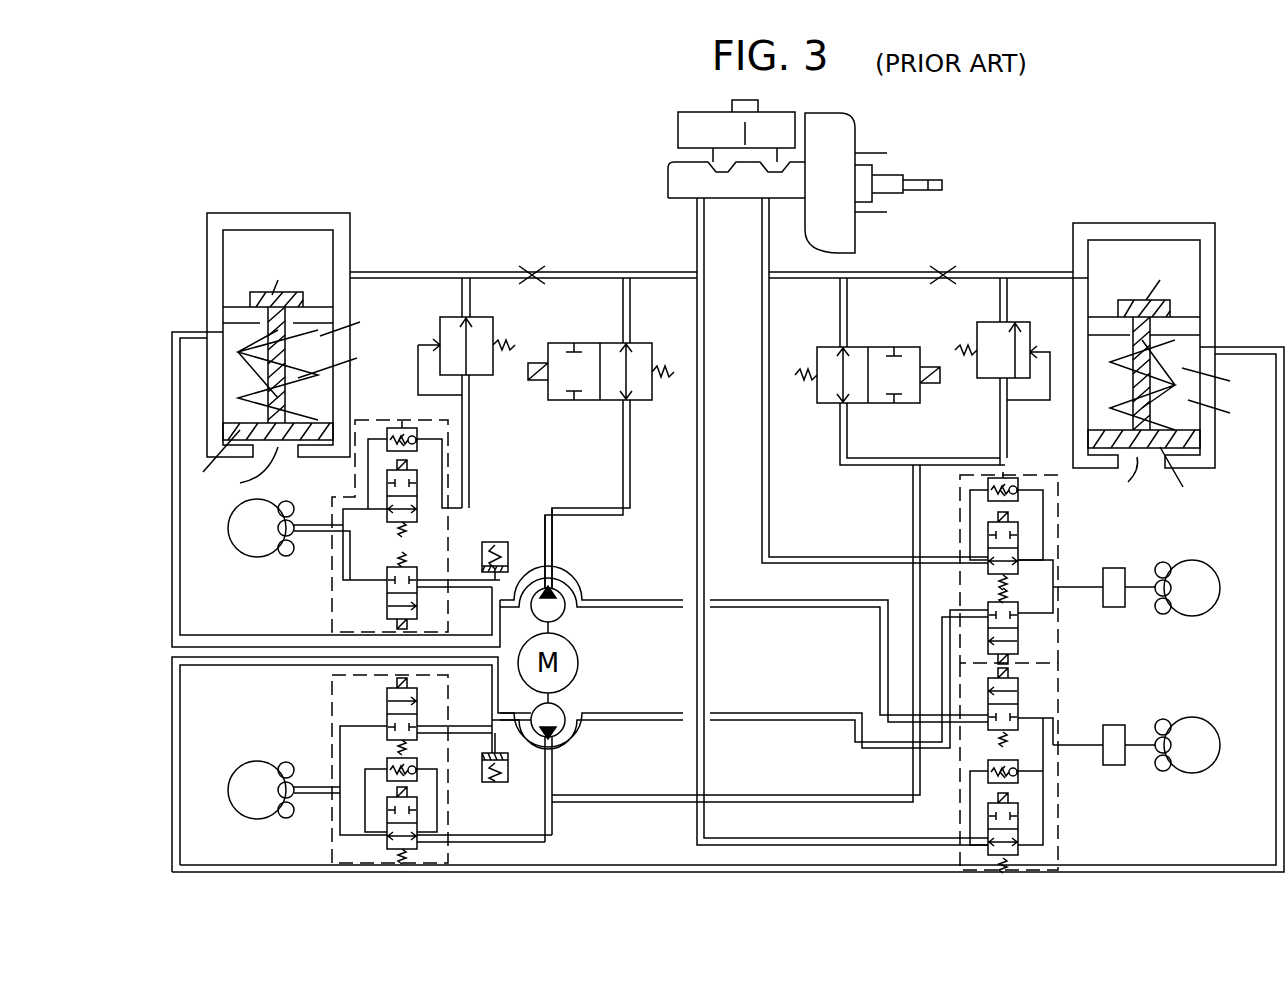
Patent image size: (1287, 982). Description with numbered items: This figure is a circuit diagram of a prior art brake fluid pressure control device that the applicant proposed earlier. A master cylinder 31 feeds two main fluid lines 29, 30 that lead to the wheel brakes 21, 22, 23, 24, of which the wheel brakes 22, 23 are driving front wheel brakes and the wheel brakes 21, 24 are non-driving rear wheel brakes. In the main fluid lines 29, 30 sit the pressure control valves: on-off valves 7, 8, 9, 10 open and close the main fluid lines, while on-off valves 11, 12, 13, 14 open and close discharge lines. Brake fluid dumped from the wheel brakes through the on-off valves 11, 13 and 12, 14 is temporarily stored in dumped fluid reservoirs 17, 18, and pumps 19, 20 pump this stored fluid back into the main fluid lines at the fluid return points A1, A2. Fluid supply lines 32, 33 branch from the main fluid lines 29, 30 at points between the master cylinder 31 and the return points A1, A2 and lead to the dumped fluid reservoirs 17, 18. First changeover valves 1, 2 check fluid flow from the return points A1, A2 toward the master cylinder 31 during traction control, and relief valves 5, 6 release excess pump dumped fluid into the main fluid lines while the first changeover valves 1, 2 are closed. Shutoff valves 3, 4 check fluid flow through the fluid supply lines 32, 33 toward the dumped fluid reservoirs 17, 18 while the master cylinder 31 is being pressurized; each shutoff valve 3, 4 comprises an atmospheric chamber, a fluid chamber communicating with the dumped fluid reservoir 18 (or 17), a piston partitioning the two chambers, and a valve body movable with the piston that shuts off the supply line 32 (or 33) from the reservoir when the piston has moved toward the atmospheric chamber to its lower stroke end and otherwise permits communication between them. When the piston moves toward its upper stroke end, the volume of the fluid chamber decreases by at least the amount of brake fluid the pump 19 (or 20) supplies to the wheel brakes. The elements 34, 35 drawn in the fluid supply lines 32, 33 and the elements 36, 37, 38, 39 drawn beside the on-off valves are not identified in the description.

The first changeover valve 1 is at (820, 403).
The first changeover valve 2 is at (608, 400).
The shutoff valve 3 is at (1148, 220).
The shutoff valve 4 is at (283, 203).
The relief valve 5 is at (985, 378).
The relief valve 6 is at (480, 375).
The on-off valve 7 is at (988, 556).
The on-off valve 8 is at (390, 515).
The on-off valve 9 is at (420, 848).
The on-off valve 10 is at (995, 858).
The on-off valve 11 is at (1018, 640).
The on-off valve 12 is at (387, 608).
The on-off valve 13 is at (387, 710).
The on-off valve 14 is at (1018, 702).
The dumped fluid reservoir 17 is at (488, 545).
The dumped fluid reservoir 18 is at (492, 782).
The pump 19 is at (565, 608).
The pump 20 is at (565, 714).
The non-driving rear wheel brake 21 is at (1167, 570).
The driving front wheel brake 22 is at (280, 550).
The driving front wheel brake 23 is at (283, 770).
The non-driving rear wheel brake 24 is at (1165, 773).
The main fluid line 29 is at (762, 250).
The main fluid line 30 is at (697, 233).
The master cylinder 31 is at (668, 172).
The fluid supply line 32 is at (882, 270).
The fluid supply line 33 is at (577, 270).
The orifice 34 is at (945, 268).
The orifice 35 is at (533, 268).
The check valve 36 is at (1010, 478).
The check valve 37 is at (400, 428).
The check valve 38 is at (417, 765).
The check valve 39 is at (1010, 762).
The fluid return point A1 is at (555, 520).
The fluid return point A2 is at (555, 806).